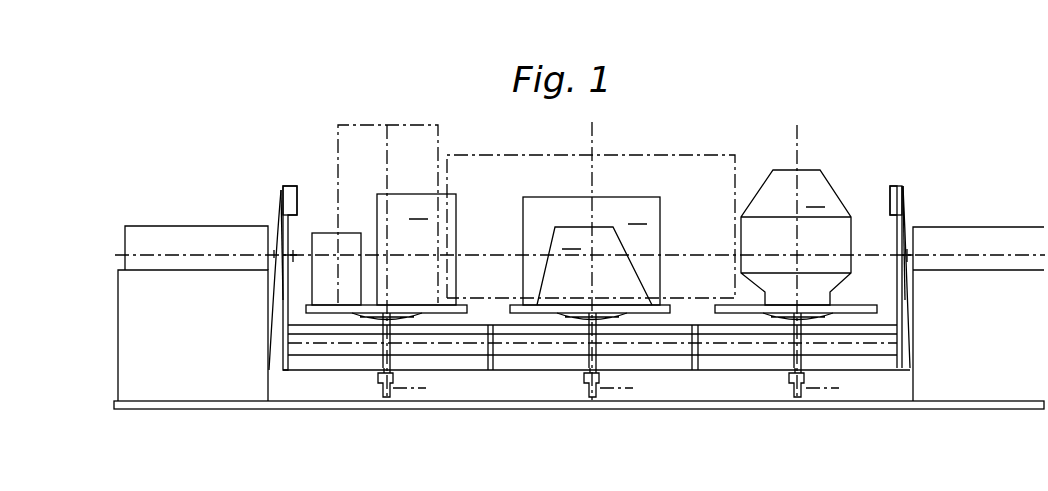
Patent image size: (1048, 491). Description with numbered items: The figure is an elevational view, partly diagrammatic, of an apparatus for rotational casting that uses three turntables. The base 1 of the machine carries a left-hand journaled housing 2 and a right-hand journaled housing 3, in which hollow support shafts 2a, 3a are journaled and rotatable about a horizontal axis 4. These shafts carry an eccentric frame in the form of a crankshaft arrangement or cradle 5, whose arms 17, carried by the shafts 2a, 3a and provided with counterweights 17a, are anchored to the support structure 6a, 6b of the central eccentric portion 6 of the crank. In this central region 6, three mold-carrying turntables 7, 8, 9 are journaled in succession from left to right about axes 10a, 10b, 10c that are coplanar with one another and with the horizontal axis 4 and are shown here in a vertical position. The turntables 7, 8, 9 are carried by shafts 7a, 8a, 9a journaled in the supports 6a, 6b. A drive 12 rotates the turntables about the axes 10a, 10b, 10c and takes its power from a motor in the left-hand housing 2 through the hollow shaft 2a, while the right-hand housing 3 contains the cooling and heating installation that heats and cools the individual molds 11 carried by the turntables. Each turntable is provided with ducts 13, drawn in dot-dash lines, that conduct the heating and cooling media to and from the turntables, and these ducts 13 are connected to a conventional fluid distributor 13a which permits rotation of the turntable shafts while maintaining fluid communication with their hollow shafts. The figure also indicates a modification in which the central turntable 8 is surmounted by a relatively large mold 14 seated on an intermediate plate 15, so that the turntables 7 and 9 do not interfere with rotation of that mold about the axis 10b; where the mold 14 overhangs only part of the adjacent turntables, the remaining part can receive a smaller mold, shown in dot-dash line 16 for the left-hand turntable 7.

The base 1 is at (154, 409).
The left-hand journaled housing 2 is at (199, 391).
The hollow support shaft 2a is at (276, 255).
The right-hand journaled housing 3 is at (1003, 381).
The hollow support shaft 3a is at (912, 255).
The horizontal axis 4 is at (193, 256).
The crankshaft arrangement or cradle 5 is at (323, 385).
The central region of eccentric 6 is at (520, 368).
The support structure 6a is at (896, 330).
The support structure 6b is at (896, 360).
The turntable 7 is at (436, 311).
The shaft 7a is at (383, 347).
The turntable 8 is at (657, 311).
The shaft 8a is at (592, 385).
The turntable 9 is at (862, 312).
The shaft 9a is at (797, 385).
The axis 10a is at (387, 126).
The axis 10b is at (592, 142).
The axis 10c is at (797, 140).
The molds 11 is at (323, 240).
The drive 12 is at (292, 303).
The ducts 13 is at (417, 393).
The fluid distributor 13a is at (386, 385).
The large mold 14 is at (720, 154).
The intermediate plate 15 is at (666, 300).
The smaller mold 16 is at (351, 125).
The arms 17 is at (282, 289).
The counterweights 17a is at (291, 188).